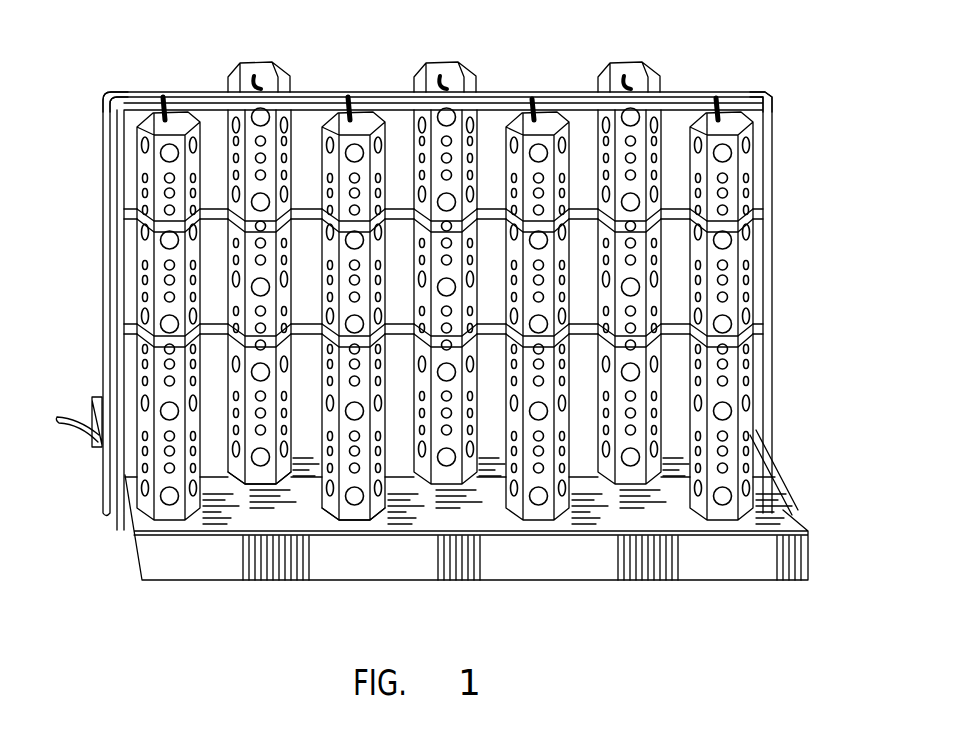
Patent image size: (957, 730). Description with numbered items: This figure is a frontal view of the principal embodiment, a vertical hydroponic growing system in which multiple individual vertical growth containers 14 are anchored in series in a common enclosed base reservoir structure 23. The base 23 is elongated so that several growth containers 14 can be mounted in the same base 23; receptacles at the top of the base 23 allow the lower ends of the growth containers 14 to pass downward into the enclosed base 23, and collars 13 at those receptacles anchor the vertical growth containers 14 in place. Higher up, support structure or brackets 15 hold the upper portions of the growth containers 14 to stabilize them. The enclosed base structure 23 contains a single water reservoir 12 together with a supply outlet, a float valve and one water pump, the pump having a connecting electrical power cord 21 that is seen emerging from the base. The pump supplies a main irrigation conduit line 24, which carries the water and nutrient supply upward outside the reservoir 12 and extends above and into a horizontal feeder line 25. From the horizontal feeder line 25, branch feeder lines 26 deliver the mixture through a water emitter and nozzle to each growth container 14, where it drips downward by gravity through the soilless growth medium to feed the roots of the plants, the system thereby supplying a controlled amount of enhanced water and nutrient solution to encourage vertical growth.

The water reservoir 12 is at (608, 505).
The collars 13 is at (330, 508).
The growth containers 14 is at (563, 157).
The support structure or brackets 15 is at (755, 330).
The electrical power cord 21 is at (75, 436).
The enclosed base reservoir structure 23 is at (790, 552).
The main irrigation conduit line 24 is at (510, 97).
The horizontal feeder line 25 is at (700, 97).
The branch feeder lines 26 is at (457, 70).